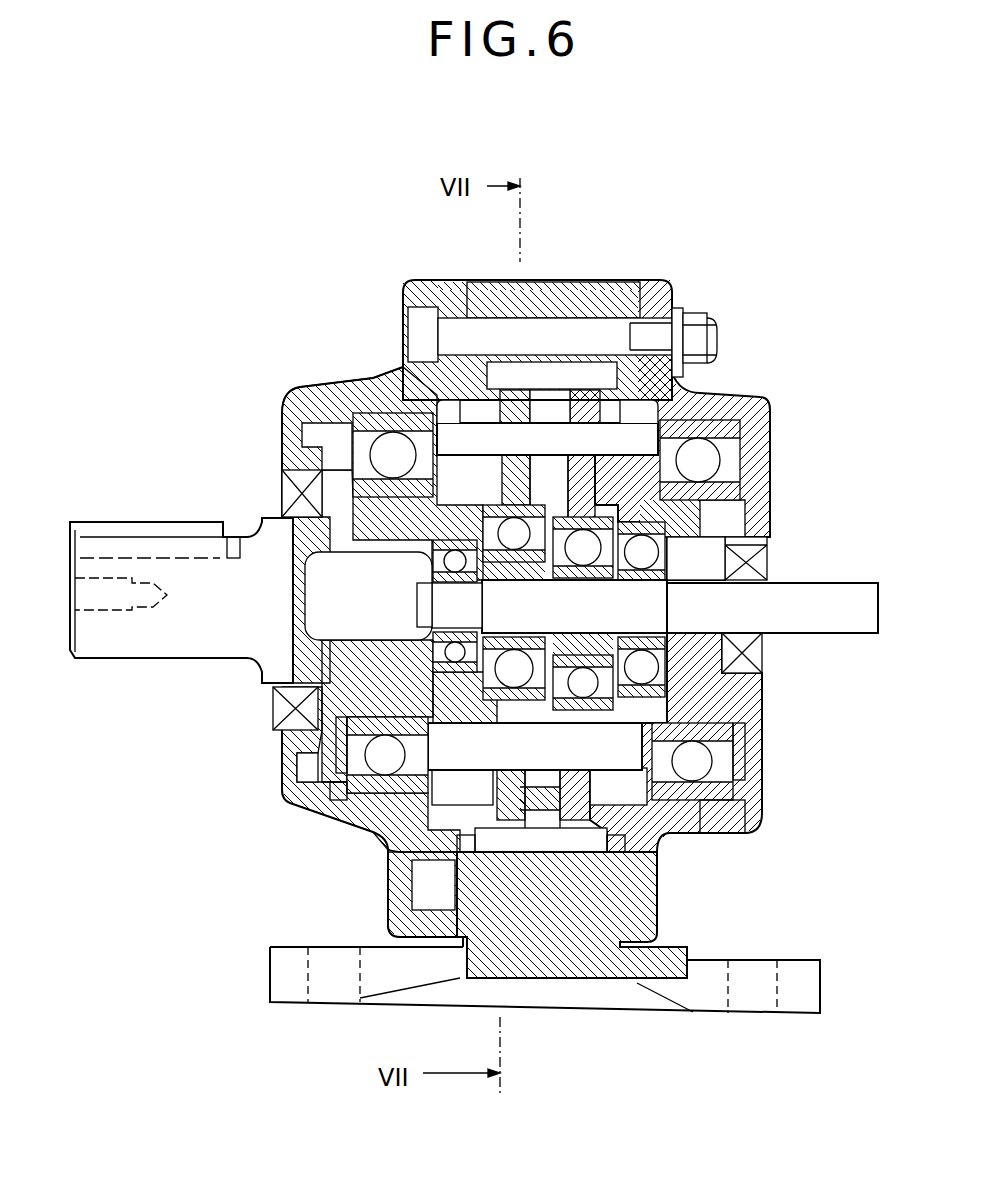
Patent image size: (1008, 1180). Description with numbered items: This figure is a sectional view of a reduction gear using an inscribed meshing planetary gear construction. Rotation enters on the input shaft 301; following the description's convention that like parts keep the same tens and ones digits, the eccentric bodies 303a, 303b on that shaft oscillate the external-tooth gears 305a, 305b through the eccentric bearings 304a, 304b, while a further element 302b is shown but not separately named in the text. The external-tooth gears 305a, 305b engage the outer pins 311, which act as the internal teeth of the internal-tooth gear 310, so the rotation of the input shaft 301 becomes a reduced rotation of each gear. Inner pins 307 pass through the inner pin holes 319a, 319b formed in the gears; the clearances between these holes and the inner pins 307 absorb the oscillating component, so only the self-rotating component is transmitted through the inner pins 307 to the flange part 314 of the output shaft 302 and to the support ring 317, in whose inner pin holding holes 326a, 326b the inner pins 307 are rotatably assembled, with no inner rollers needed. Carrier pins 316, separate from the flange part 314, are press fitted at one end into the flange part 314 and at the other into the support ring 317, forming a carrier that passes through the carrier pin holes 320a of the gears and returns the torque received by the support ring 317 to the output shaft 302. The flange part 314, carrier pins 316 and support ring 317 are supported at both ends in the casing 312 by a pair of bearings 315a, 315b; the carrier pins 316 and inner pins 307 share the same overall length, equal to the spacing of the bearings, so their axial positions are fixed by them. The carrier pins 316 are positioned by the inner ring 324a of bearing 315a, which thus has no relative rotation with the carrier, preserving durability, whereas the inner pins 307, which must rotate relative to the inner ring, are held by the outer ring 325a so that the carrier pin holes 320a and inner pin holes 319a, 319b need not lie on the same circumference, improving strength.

The input shaft 301 is at (805, 625).
The output shaft 302 is at (102, 638).
The housing lower part 302b is at (367, 832).
The oil seal 303a is at (755, 565).
The oil seal 303b is at (420, 615).
The collar 304a is at (740, 540).
The collar 304b is at (310, 740).
The external-tooth gear 305a is at (590, 880).
The external-tooth gear 305b is at (520, 880).
The inner pin 307 is at (702, 316).
The internal-tooth gear 310 is at (548, 305).
The outer pin 311 is at (563, 375).
The casing 312 is at (653, 297).
The flange part 314 is at (282, 490).
The bearing 315a is at (752, 762).
The bearing 315b is at (330, 785).
The carrier pin 316 is at (395, 815).
The support ring 317 is at (762, 410).
The inner pin hole 319a is at (742, 480).
The inner pin hole 319b is at (353, 413).
The carrier pin hole 320a is at (607, 765).
The inner ring 324a is at (330, 762).
The outer ring 325a is at (345, 795).
The inner pin holding hole 326a is at (620, 440).
The inner pin holding hole 326b is at (440, 435).